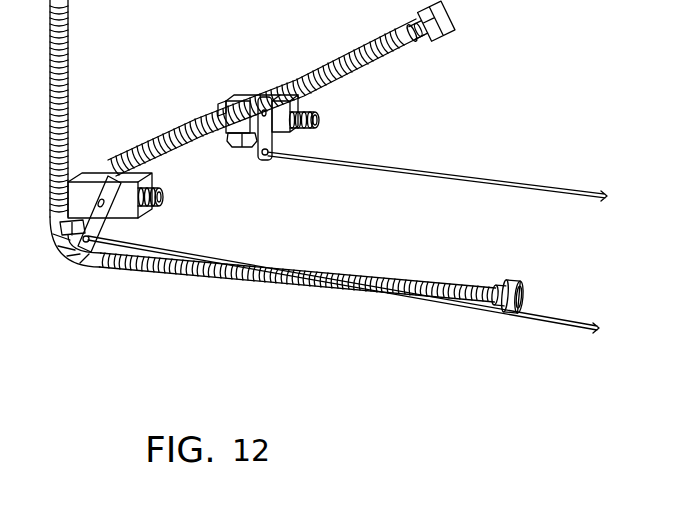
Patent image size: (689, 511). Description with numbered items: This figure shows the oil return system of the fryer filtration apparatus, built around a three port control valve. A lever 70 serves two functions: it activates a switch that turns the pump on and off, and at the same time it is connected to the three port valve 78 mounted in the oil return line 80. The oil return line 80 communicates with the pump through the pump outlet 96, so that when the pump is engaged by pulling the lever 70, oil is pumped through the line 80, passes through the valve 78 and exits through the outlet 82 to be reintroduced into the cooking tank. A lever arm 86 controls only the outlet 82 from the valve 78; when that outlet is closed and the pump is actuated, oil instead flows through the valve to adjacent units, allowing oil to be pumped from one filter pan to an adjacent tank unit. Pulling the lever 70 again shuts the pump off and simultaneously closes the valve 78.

The lever 70 is at (430, 170).
The three port valve 78 is at (243, 99).
The oil return line 80 is at (168, 276).
The outlet 82 is at (318, 119).
The lever arm 86 is at (268, 143).
The pump outlet 96 is at (515, 278).